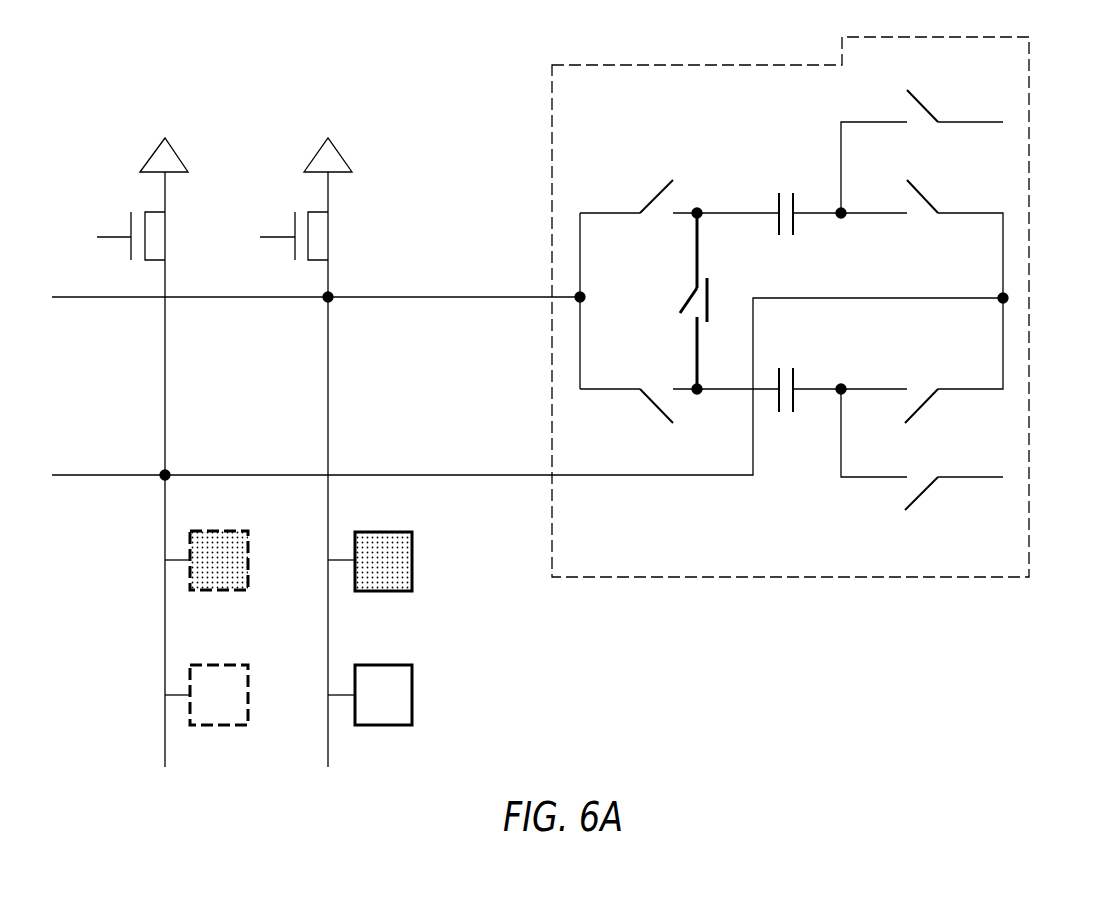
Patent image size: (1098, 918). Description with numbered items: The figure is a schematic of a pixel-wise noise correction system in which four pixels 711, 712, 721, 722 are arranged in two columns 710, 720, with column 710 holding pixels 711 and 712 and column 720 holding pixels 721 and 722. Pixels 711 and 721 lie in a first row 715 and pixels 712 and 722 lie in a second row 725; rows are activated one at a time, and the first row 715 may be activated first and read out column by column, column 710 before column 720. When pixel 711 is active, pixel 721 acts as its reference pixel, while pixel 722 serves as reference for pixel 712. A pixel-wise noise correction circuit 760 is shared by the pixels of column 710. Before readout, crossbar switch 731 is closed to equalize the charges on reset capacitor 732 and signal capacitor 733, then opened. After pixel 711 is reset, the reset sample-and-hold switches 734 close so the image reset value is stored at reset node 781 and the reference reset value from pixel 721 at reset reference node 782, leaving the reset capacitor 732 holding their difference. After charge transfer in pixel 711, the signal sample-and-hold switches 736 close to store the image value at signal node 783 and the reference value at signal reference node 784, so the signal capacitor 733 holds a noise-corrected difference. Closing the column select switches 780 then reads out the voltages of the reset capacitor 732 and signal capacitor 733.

The column 710 is at (358, 114).
The column 720 is at (195, 114).
The pixel 711 is at (414, 531).
The pixel 712 is at (414, 665).
The pixel 721 is at (250, 530).
The pixel 722 is at (250, 665).
The first row 715 is at (143, 528).
The second row 725 is at (143, 665).
The crossbar switch 731 is at (665, 273).
The reset capacitor 732 is at (819, 181).
The signal capacitor 733 is at (819, 424).
The reset sample-and-hold switches 734 is at (690, 181).
The signal sample-and-hold switches 736 is at (690, 424).
The pixel-wise noise correction circuit 760 is at (1029, 577).
The column select switches 780 is at (953, 87).
The reset node 781 is at (698, 207).
The reset reference node 782 is at (840, 219).
The signal node 783 is at (698, 395).
The signal reference node 784 is at (842, 383).